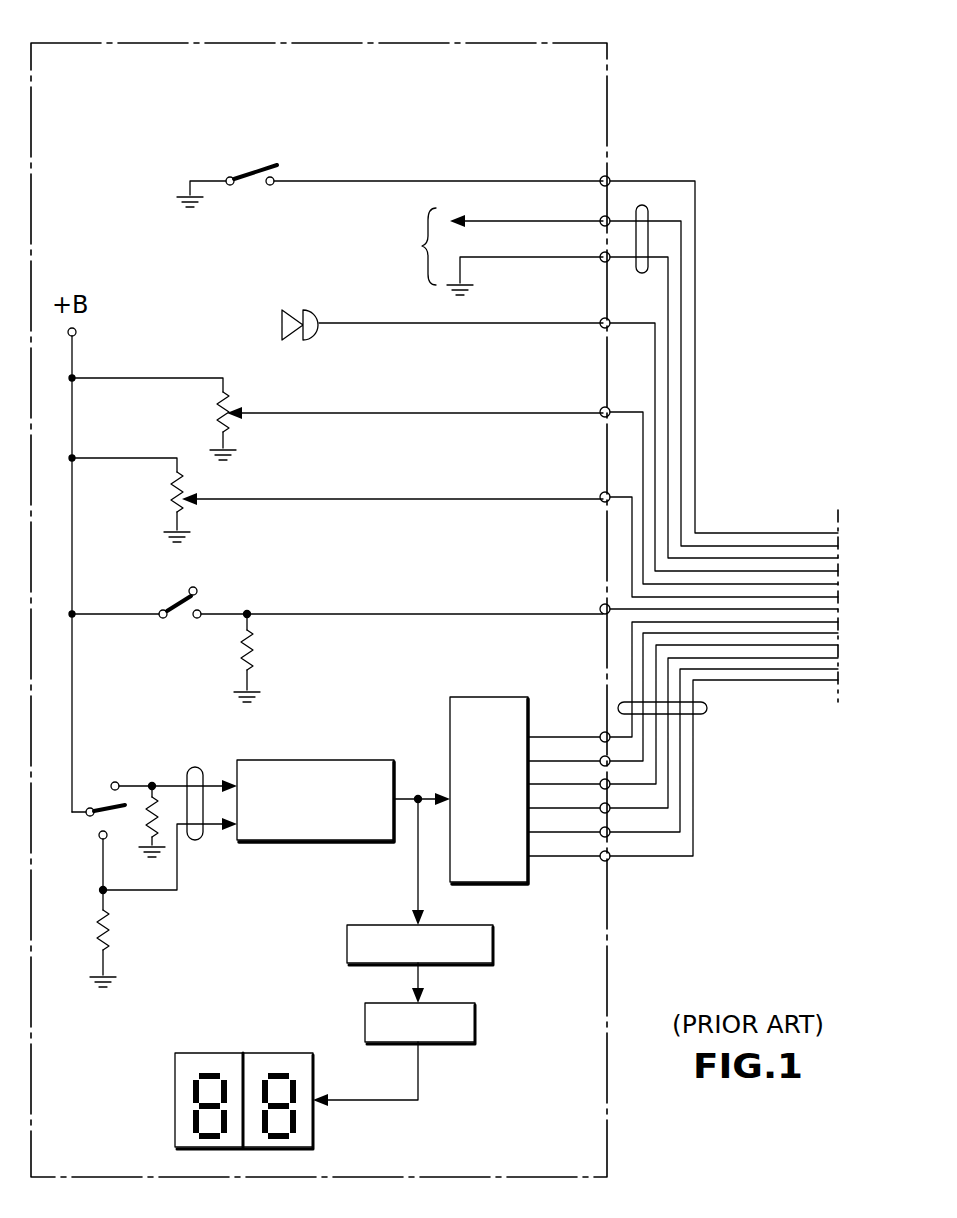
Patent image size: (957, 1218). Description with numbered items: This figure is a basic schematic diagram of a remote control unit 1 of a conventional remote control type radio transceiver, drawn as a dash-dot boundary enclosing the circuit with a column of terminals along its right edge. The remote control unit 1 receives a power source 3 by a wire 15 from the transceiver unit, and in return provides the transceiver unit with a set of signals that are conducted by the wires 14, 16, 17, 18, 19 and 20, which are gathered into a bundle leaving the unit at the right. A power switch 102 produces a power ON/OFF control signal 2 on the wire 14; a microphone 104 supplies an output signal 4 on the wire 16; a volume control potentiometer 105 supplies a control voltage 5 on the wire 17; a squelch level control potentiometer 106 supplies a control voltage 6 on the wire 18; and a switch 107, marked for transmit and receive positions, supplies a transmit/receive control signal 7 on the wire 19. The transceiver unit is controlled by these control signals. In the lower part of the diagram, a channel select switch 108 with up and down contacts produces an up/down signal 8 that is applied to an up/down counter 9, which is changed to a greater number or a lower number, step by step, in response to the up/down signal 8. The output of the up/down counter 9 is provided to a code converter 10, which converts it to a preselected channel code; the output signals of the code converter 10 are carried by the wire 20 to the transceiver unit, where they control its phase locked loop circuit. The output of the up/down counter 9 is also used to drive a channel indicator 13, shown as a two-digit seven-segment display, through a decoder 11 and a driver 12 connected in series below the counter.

The remote control unit 1 is at (401, 43).
The power ON/OFF control signal 2 is at (362, 181).
The power source 3 is at (500, 243).
The output signal 4 is at (338, 323).
The control voltage 5 is at (318, 413).
The control voltage 6 is at (285, 499).
The transmit/receive control signal 7 is at (303, 614).
The up/down signal 8 is at (197, 768).
The up/down counter 9 is at (330, 760).
The code converter 10 is at (480, 697).
The decoder 11 is at (493, 945).
The driver 12 is at (476, 1020).
The channel indicator 13 is at (235, 1053).
The wire 14 is at (632, 181).
The wire 15 is at (648, 224).
The wire 16 is at (617, 322).
The wire 17 is at (626, 410).
The wire 18 is at (622, 496).
The wire 19 is at (625, 607).
The wire 20 is at (700, 714).
The power switch 102 is at (242, 186).
The microphone 104 is at (309, 310).
The volume control potentiometer 105 is at (233, 392).
The squelch level control potentiometer 106 is at (185, 515).
The switch 107 is at (150, 637).
The channel select switch 108 is at (97, 790).